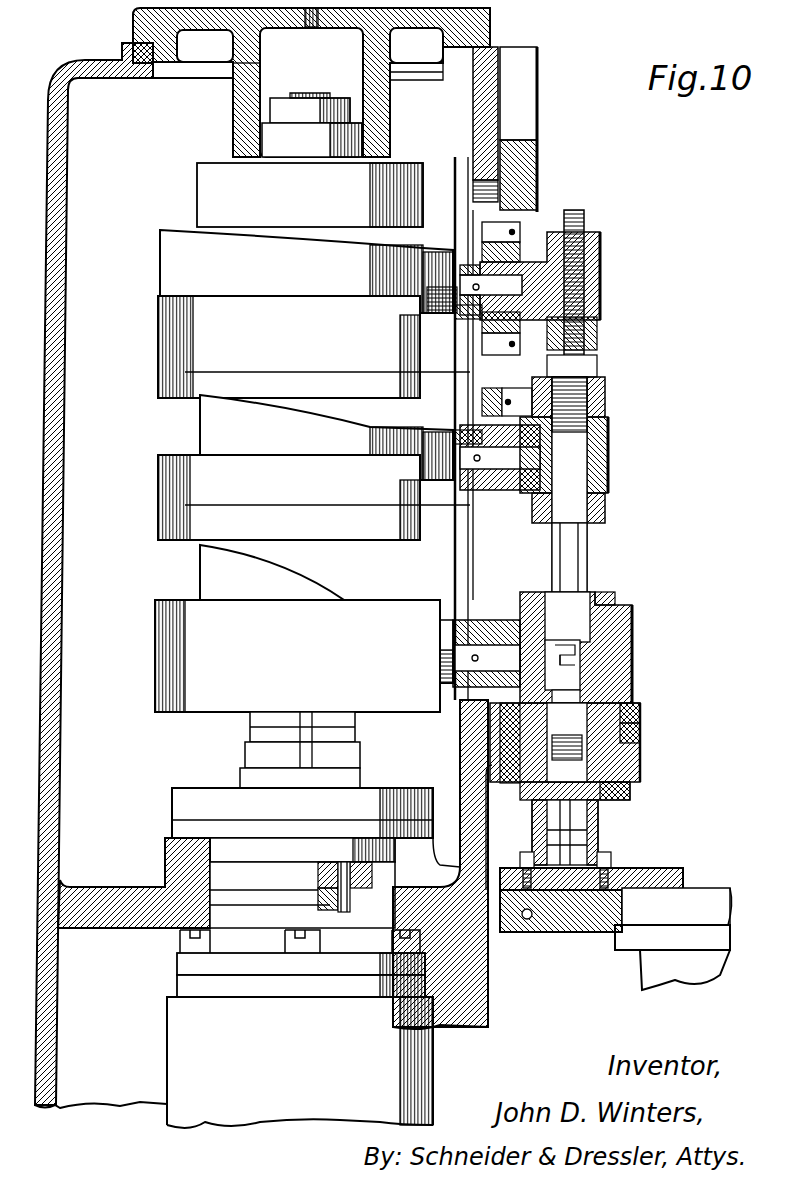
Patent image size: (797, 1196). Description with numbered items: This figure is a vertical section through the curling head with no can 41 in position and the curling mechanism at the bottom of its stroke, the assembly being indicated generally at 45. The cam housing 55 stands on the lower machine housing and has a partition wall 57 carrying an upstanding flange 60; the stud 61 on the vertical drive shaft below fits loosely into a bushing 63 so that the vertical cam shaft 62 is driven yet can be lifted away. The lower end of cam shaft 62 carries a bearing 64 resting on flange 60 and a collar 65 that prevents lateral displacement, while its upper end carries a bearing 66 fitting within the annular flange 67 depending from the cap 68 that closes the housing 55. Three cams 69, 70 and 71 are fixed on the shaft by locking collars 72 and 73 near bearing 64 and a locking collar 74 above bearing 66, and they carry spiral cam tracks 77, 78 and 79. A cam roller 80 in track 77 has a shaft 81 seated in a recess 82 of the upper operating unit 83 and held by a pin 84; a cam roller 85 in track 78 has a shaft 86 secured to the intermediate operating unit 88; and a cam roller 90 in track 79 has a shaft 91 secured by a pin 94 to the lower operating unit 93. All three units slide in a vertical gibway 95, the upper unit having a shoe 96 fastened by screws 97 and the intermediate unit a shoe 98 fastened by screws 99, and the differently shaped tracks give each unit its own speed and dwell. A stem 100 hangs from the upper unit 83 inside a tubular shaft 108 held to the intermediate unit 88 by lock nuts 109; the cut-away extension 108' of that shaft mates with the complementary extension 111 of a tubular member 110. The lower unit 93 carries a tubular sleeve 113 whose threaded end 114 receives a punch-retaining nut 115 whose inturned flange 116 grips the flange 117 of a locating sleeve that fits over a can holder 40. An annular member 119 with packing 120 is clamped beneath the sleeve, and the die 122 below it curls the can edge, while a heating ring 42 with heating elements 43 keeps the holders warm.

The can holder 40 is at (611, 866).
The can 41 is at (588, 823).
The heating ring 42 is at (590, 910).
The heating elements 43 is at (527, 920).
The housing 45 is at (57, 63).
The housing 55 is at (62, 412).
The partition wall 57 is at (100, 928).
The upstanding flange 60 is at (175, 868).
The stud 61 is at (335, 880).
The vertical cam shaft 62 is at (297, 165).
The bushing 63 is at (352, 868).
The bearing 64 is at (178, 802).
The collar 65 is at (182, 848).
The bearing 66 is at (262, 140).
The annular flange 67 is at (236, 107).
The cap 68 is at (140, 22).
The cam 69 is at (178, 327).
The cam 70 is at (178, 480).
The cam 71 is at (170, 680).
The locking collar 72 is at (262, 751).
The locking collar 73 is at (262, 726).
The locking collar 74 is at (283, 102).
The spiral cam track 77 is at (290, 287).
The spiral cam track 78 is at (275, 440).
The spiral cam track 79 is at (290, 600).
The cam roller 80 is at (468, 288).
The shaft 81 is at (468, 270).
The recess 82 is at (491, 290).
The upper operating unit 83 is at (610, 287).
The pin 84 is at (470, 312).
The cam roller 85 is at (428, 440).
The shaft 86 is at (500, 457).
The intermediate operating unit 88 is at (617, 444).
The cam roller 90 is at (443, 648).
The shaft 91 is at (468, 628).
The lower operating unit 93 is at (641, 612).
The pin 94 is at (487, 658).
The gibway 95 is at (540, 118).
The shoe 96 is at (480, 215).
The screws 97 is at (530, 218).
The shoe 98 is at (487, 391).
The screws 99 is at (512, 392).
The stem 100 is at (585, 366).
The tubular shaft 108 is at (600, 558).
The integral extension 108' is at (617, 661).
The lock nuts 109 is at (607, 398).
The tubular member 110 is at (575, 690).
The integral extension 111 is at (572, 648).
The tubular sleeve 113 is at (615, 596).
The exterior thread 114 is at (625, 714).
The punch-retaining nut 115 is at (635, 750).
The inturned annular flange 116 is at (616, 812).
The flange 117 is at (520, 785).
The annular member 119 is at (530, 767).
The packing 120 is at (625, 733).
The die 122 is at (628, 790).